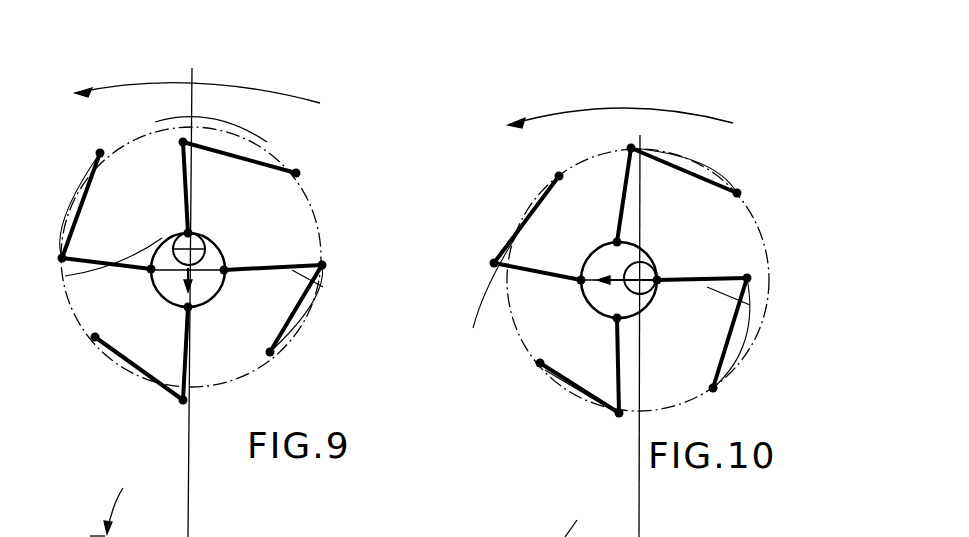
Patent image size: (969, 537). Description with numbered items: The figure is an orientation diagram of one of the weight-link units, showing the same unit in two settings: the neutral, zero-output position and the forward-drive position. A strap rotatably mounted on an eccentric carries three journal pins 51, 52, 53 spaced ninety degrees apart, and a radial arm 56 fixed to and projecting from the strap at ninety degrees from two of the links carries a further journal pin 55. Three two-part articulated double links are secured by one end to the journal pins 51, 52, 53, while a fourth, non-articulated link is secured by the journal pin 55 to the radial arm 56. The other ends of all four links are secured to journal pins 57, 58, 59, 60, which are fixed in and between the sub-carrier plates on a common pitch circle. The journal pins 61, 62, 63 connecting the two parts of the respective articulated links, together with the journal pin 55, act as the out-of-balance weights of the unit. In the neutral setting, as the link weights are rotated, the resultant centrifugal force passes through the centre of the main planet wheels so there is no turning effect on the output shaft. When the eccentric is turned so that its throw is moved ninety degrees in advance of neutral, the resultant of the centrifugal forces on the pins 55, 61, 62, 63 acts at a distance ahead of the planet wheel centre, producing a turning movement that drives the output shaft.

In FIG. 9, the journal pin 51 is at (222, 270).
In FIG. 10, the journal pin 51 is at (616, 321).
In FIG. 9, the journal pin 52 is at (191, 232).
In FIG. 10, the journal pin 52 is at (658, 280).
In FIG. 9, the journal pin 53 is at (150, 272).
In FIG. 10, the journal pin 53 is at (616, 241).
In FIG. 9, the journal pin 55 is at (181, 402).
In FIG. 10, the journal pin 55 is at (492, 266).
In FIG. 9, the radial arm 56 is at (186, 309).
In FIG. 10, the radial arm 56 is at (579, 279).
In FIG. 9, the journal pin 57 is at (270, 352).
In FIG. 10, the journal pin 57 is at (538, 363).
In FIG. 9, the journal pin 58 is at (100, 152).
In FIG. 10, the journal pin 58 is at (739, 192).
In FIG. 9, the journal pin 59 is at (297, 172).
In FIG. 10, the journal pin 59 is at (715, 390).
In FIG. 9, the journal pin 60 is at (94, 337).
In FIG. 10, the journal pin 60 is at (559, 174).
In FIG. 9, the journal pin 61 is at (321, 263).
In FIG. 10, the journal pin 61 is at (619, 416).
In FIG. 9, the journal pin 62 is at (62, 258).
In FIG. 10, the journal pin 62 is at (630, 147).
In FIG. 9, the journal pin 63 is at (182, 141).
In FIG. 10, the journal pin 63 is at (747, 277).